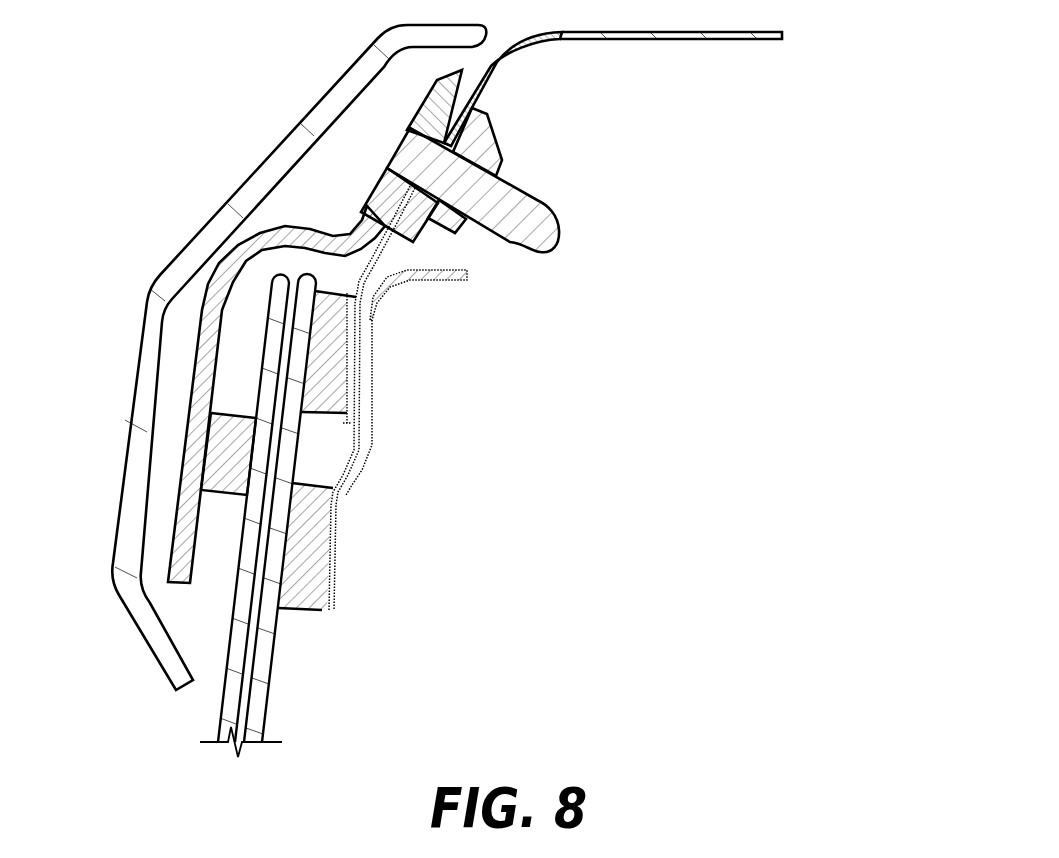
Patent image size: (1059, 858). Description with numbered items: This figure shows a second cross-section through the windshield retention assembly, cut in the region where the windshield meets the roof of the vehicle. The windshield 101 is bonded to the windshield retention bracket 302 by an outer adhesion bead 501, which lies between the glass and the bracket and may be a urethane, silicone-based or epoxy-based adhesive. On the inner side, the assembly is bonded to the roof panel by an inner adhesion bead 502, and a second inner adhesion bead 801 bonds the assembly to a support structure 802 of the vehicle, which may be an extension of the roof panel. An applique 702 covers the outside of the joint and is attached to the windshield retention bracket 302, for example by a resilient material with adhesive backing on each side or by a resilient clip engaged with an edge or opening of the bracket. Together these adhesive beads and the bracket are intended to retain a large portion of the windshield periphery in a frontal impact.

The applique 702 is at (292, 128).
The windshield retention bracket 302 is at (224, 258).
The outer adhesion bead 501 is at (235, 445).
The inner adhesion bead 502 is at (332, 368).
The second inner adhesion bead 801 is at (307, 545).
The support structure 802 is at (353, 457).
The windshield 101 is at (268, 690).